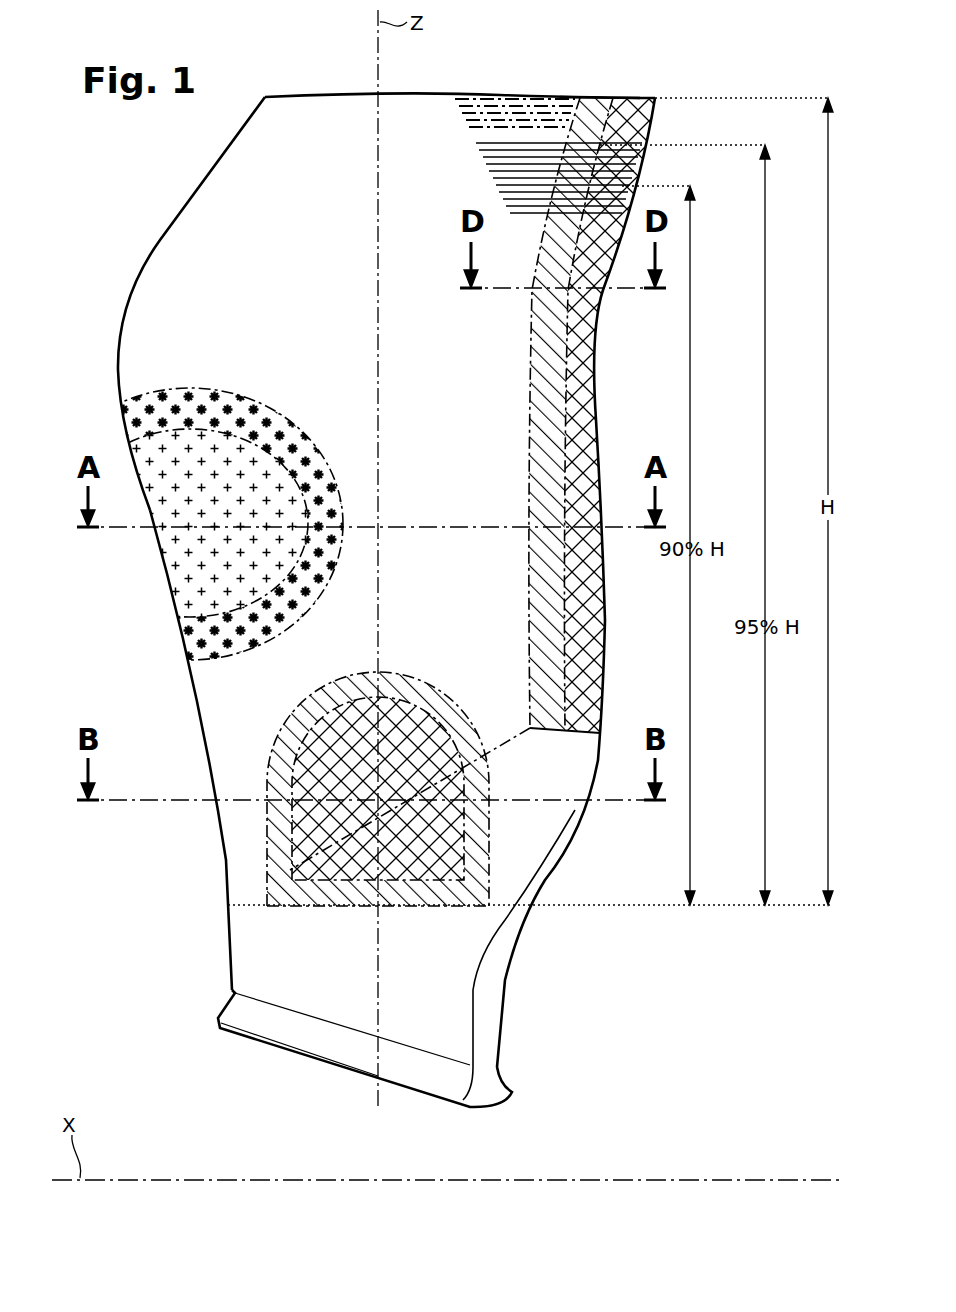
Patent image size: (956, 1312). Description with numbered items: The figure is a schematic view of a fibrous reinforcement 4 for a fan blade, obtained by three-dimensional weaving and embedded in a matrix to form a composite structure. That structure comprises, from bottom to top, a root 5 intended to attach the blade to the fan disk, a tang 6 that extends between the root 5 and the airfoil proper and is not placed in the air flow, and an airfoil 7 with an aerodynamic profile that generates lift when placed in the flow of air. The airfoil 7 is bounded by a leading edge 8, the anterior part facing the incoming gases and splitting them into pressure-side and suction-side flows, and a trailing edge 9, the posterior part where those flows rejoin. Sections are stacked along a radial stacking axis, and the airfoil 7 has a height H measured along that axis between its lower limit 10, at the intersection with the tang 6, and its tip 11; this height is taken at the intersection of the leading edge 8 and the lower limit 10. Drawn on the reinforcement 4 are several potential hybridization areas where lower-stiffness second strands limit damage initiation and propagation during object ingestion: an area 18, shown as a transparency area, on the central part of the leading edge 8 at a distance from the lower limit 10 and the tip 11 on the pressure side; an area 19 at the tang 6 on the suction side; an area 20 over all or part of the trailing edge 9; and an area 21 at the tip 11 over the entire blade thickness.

The fibrous reinforcement 4 is at (712, 70).
The root 5 is at (421, 1077).
The tang 6 is at (248, 836).
The airfoil 7 is at (182, 297).
The leading edge 8 is at (156, 242).
The trailing edge 9 is at (598, 364).
The lower limit 10 is at (517, 742).
The tip 11 is at (600, 95).
The area 18 is at (240, 512).
The area 19 is at (434, 850).
The area 20 is at (588, 640).
The area 21 is at (547, 128).